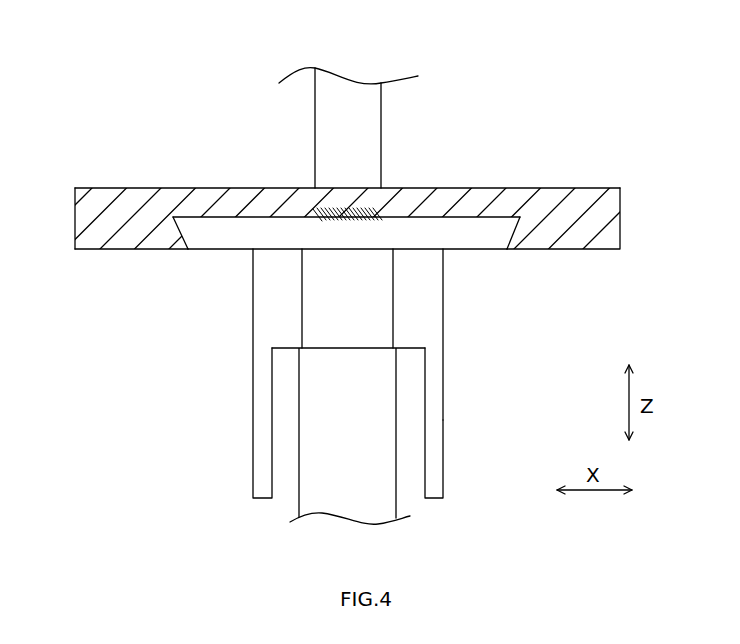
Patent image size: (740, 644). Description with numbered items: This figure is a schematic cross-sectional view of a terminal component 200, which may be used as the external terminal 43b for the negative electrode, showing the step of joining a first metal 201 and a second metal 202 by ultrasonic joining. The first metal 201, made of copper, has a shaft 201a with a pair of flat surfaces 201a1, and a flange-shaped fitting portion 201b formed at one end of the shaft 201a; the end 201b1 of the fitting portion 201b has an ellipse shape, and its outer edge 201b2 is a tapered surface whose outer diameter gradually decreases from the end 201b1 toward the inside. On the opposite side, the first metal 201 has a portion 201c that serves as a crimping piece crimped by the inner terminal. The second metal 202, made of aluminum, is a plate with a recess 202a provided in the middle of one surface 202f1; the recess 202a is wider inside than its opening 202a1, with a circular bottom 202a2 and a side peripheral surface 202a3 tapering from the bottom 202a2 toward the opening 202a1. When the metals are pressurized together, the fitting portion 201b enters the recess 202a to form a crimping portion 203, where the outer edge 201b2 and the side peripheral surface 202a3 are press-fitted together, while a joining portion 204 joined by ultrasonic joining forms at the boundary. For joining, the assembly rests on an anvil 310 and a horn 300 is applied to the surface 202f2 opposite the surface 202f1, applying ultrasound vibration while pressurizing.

The external terminal 43b is at (143, 106).
The terminal component 200 is at (584, 113).
The first metal 201 is at (228, 382).
The shaft 201a is at (447, 315).
The flat surfaces 201a1 is at (355, 277).
The fitting portion 201b is at (195, 253).
The end of fitting portion 201b1 is at (477, 216).
The outer edge of fitting portion 201b2 is at (523, 232).
The crimping piece portion 201c is at (443, 445).
The second metal 202 is at (592, 170).
The recess 202a is at (421, 191).
The opening 202a1 is at (262, 250).
The bottom of recess 202a2 is at (260, 217).
The side peripheral surface 202a3 is at (513, 233).
The surface 202f1 is at (100, 249).
The surface 202f2 is at (113, 188).
The crimping portion 203 is at (178, 212).
The joining portion 204 is at (315, 207).
The horn 300 is at (348, 93).
The anvil 310 is at (345, 497).